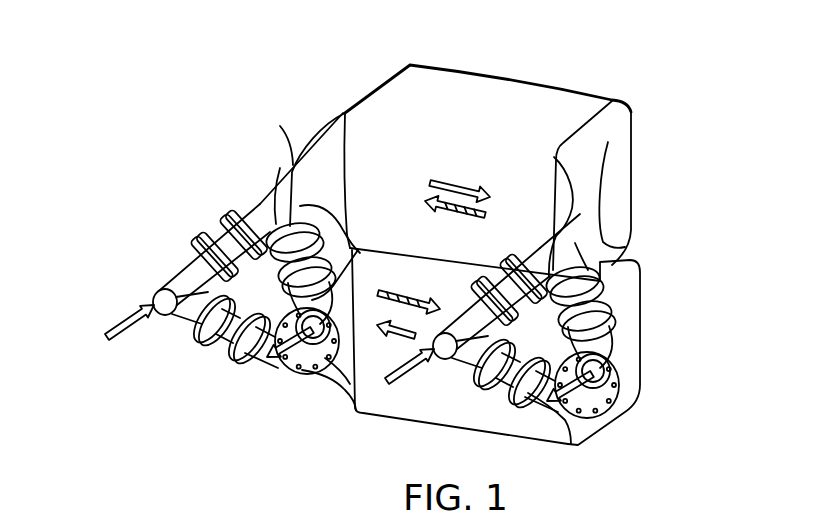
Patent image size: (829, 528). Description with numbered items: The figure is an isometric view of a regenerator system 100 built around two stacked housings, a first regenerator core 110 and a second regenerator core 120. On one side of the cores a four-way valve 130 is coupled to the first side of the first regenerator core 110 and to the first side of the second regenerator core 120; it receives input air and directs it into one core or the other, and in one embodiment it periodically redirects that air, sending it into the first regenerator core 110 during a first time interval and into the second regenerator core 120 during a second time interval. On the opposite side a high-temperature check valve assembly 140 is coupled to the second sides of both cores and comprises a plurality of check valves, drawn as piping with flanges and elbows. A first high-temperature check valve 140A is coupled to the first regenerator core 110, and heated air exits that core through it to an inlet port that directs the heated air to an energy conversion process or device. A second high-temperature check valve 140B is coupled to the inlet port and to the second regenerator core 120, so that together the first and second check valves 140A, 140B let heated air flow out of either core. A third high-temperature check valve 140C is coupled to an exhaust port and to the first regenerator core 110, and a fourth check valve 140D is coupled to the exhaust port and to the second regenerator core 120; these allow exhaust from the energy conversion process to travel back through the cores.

The regenerator system 100 is at (560, 58).
The first regenerator core 110 is at (533, 197).
The second regenerator core 120 is at (604, 268).
The four-way valve 130 is at (647, 245).
The high-temperature check valve assembly 140 is at (276, 160).
The first high-temperature check valve 140A is at (293, 170).
The second high-temperature check valve 140B is at (312, 378).
The third high-temperature check valve 140C is at (157, 252).
The lower pipe section 140D is at (207, 350).